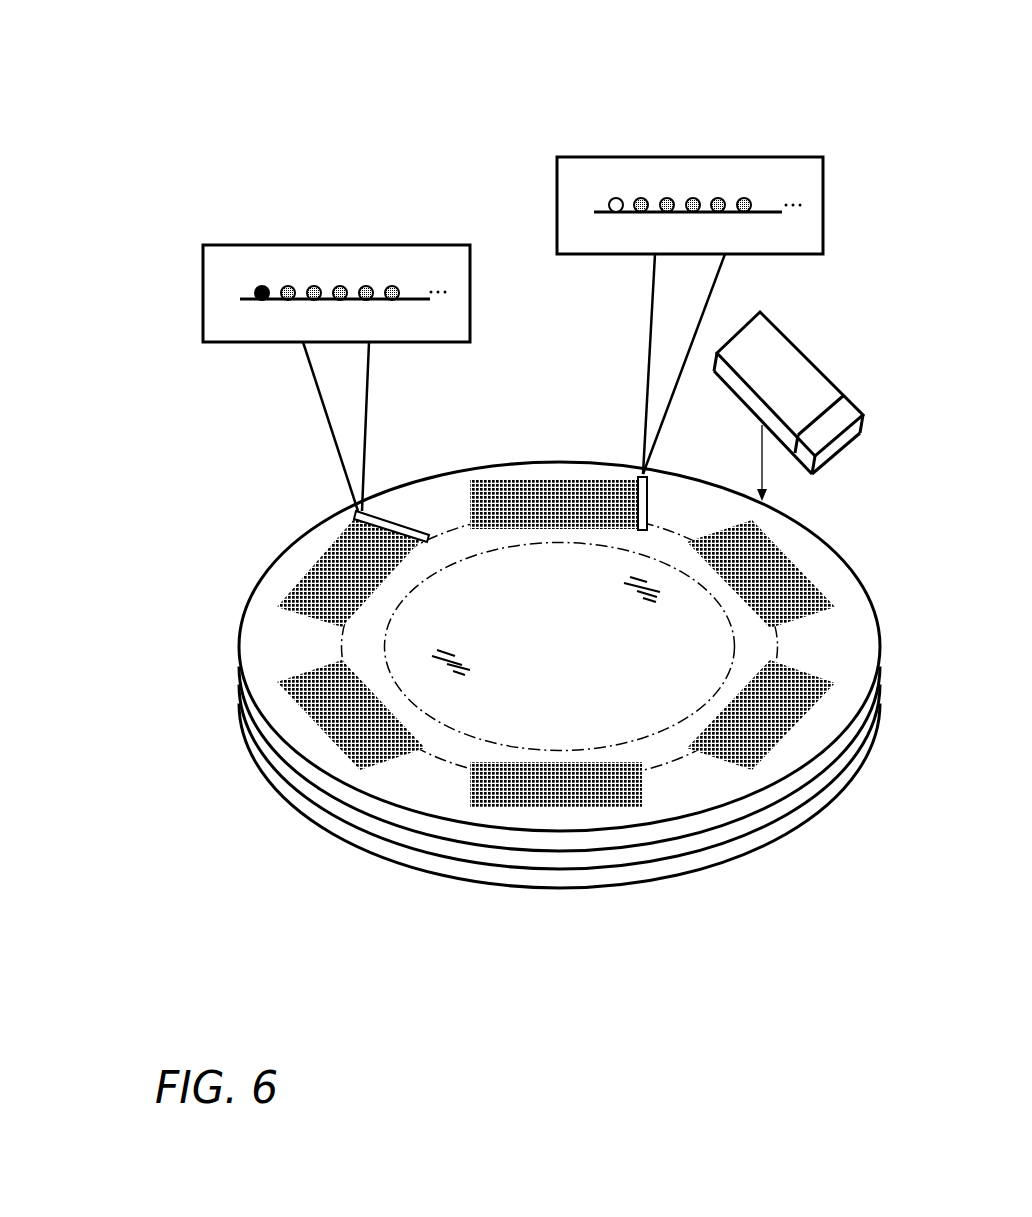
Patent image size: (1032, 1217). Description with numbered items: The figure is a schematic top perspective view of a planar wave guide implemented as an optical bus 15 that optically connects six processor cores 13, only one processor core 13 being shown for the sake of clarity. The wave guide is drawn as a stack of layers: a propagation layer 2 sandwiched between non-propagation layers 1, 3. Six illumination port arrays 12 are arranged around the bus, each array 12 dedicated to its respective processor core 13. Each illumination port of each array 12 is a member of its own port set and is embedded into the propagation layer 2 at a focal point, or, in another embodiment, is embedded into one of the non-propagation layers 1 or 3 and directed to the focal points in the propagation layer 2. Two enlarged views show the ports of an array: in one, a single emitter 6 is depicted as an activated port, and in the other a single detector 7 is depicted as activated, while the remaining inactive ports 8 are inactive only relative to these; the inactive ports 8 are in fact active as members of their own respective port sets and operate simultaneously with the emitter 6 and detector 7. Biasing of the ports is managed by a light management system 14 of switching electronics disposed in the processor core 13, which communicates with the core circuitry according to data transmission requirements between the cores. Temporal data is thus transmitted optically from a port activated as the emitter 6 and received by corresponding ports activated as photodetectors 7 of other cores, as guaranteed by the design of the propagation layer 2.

The non-propagation layer 1 is at (663, 833).
The propagation layer 2 is at (528, 858).
The non-propagation layer 3 is at (410, 857).
The emitter 6 is at (610, 195).
The detector 7 is at (260, 282).
The inactive ports 8 is at (390, 280).
The illumination port array 12 is at (302, 677).
The processor core 13 is at (793, 394).
The light management system 14 is at (844, 452).
The optical bus 15 is at (178, 394).